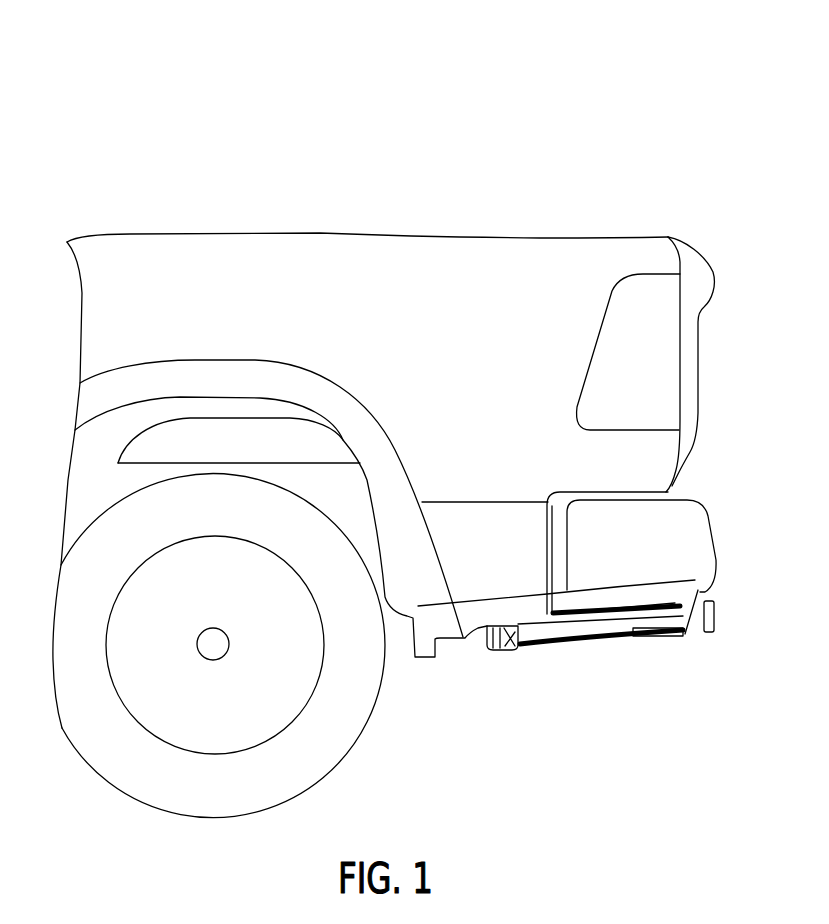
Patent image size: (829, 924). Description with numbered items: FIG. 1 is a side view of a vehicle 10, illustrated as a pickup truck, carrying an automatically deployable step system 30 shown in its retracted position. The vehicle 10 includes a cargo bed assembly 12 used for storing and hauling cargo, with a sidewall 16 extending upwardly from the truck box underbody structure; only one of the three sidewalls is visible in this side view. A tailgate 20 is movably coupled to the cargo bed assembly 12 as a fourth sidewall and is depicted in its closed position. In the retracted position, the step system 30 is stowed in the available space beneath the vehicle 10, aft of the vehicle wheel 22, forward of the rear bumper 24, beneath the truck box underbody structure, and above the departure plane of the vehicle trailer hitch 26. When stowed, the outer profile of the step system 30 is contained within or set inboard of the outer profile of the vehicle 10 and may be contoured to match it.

The vehicle 10 is at (677, 90).
The cargo bed assembly 12 is at (195, 186).
The sidewall 16 is at (321, 252).
The tailgate 20 is at (690, 357).
The vehicle wheel 22 is at (75, 597).
The rear bumper 24 is at (688, 523).
The vehicle trailer hitch 26 is at (715, 616).
The step system 30 is at (588, 657).